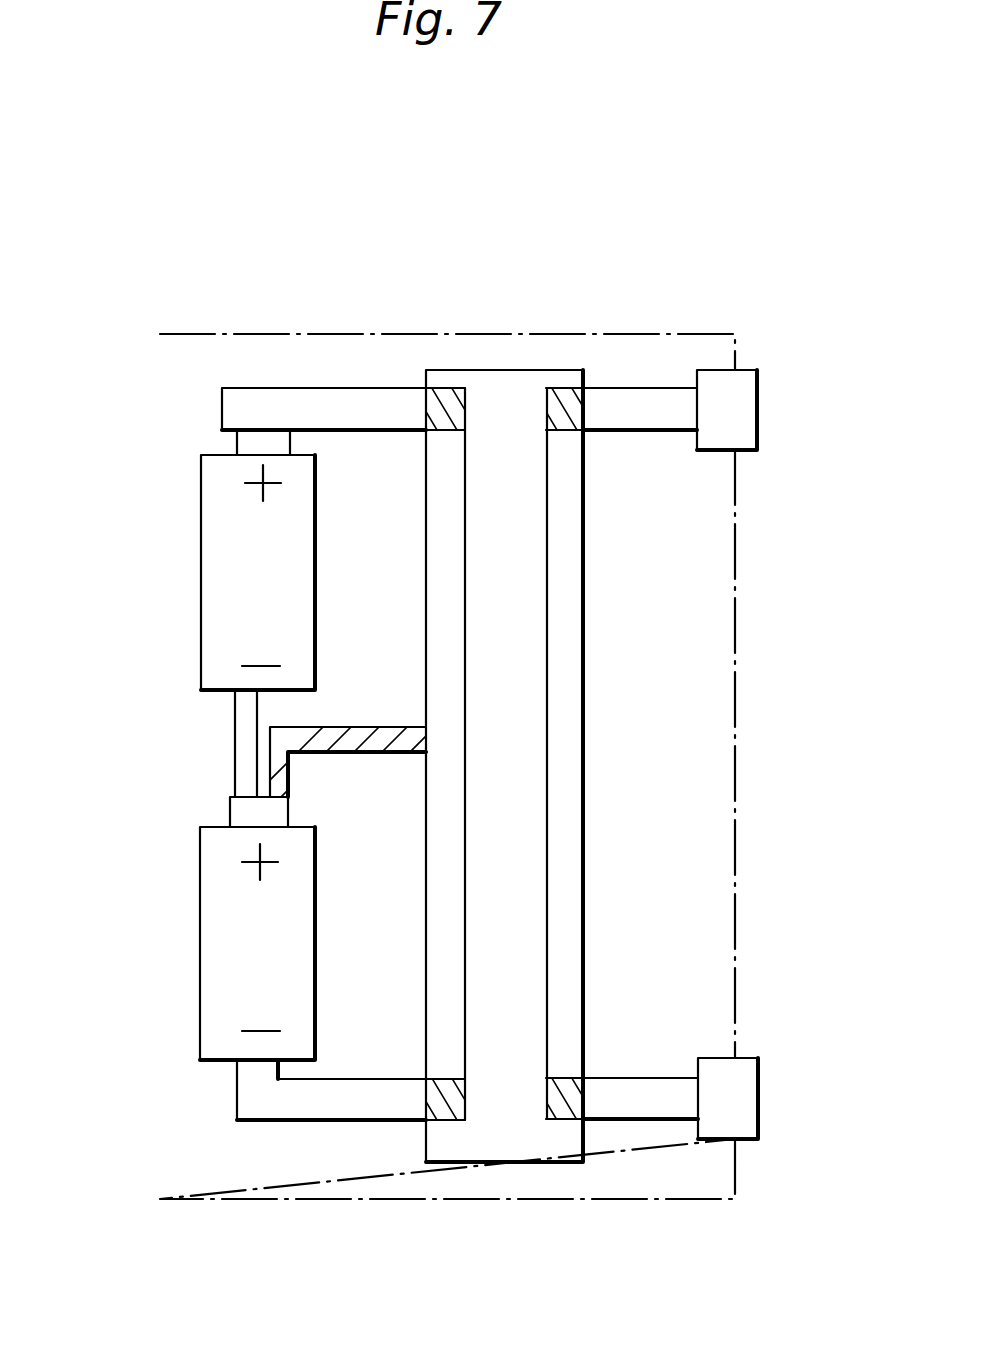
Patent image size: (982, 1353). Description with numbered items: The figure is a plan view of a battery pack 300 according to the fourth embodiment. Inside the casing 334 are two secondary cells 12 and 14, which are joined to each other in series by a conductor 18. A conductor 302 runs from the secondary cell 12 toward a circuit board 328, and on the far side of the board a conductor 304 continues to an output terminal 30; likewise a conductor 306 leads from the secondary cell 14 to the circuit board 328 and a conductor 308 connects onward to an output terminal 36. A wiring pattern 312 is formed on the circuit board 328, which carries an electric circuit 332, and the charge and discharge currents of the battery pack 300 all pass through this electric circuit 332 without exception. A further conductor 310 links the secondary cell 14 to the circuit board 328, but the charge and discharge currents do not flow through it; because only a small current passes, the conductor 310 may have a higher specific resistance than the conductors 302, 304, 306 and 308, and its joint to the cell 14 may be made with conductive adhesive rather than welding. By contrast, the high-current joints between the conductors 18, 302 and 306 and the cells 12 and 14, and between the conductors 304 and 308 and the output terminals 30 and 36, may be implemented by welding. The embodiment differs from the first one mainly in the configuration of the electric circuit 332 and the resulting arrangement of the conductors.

The battery pack 300 is at (515, 162).
The conductor 302 is at (309, 387).
The conductor 304 is at (648, 385).
The conductor 306 is at (305, 1122).
The conductor 308 is at (620, 1122).
The conductor 310 is at (343, 727).
The wiring pattern 312 is at (447, 387).
The circuit board 328 is at (583, 765).
The electric circuit 332 is at (547, 587).
The casing 334 is at (715, 1203).
The secondary cell 12 is at (315, 531).
The secondary cell 14 is at (315, 922).
The conductor 18 is at (235, 747).
The output terminal 30 is at (748, 370).
The output terminal 36 is at (748, 1058).